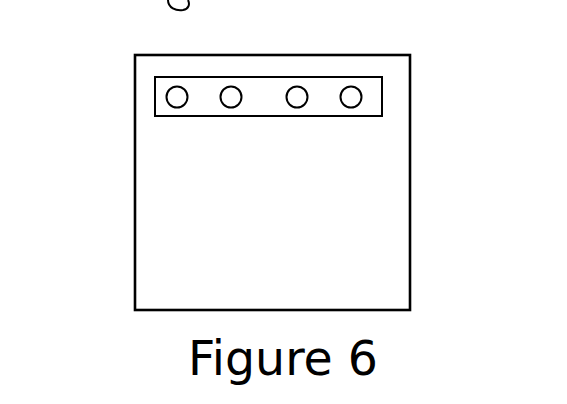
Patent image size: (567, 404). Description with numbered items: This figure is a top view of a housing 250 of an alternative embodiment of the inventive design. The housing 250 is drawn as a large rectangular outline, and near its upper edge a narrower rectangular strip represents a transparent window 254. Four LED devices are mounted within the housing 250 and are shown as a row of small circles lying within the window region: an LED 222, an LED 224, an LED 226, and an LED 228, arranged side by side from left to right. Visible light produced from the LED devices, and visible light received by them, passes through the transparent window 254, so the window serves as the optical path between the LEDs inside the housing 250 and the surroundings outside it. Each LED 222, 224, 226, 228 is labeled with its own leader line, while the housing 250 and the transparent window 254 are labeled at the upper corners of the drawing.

The housing 250 is at (162, 54).
The transparent window 254 is at (383, 88).
The LED 222 is at (168, 106).
The LED 224 is at (219, 106).
The LED 226 is at (289, 106).
The LED 228 is at (343, 106).